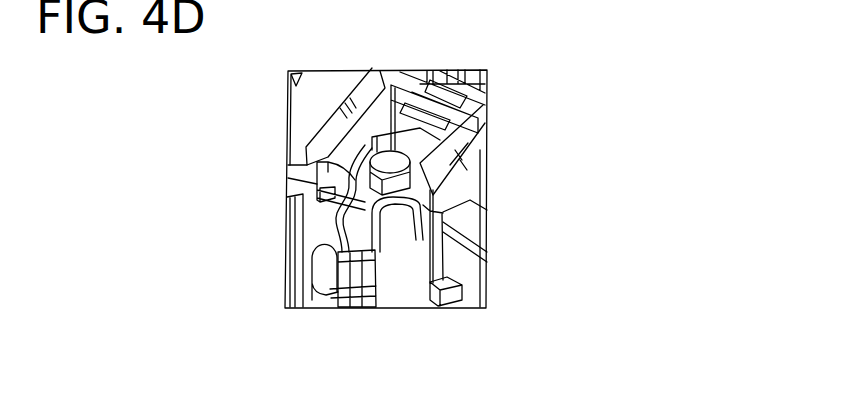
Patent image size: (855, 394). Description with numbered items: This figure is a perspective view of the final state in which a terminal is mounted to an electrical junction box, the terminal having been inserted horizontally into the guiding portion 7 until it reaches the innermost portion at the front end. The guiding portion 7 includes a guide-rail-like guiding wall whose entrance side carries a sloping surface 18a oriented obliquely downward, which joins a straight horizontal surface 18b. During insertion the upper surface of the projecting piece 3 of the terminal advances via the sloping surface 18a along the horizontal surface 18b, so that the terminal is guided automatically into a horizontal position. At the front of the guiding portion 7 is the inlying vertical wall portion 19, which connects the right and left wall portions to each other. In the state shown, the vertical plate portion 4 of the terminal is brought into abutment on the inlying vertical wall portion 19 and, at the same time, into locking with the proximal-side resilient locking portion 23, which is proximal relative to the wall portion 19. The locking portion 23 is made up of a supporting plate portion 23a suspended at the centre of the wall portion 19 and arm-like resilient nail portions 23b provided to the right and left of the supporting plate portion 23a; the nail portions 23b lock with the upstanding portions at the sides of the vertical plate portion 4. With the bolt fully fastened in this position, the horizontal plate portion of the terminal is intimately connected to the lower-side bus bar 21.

The guiding portion 7 is at (327, 111).
The sloping surface 18a is at (317, 184).
The straight horizontal surface 18b is at (372, 150).
The projecting piece 3 is at (380, 145).
The vertical plate portion 4 is at (413, 100).
The inlying vertical wall portion 19 is at (485, 73).
The lower-side bus bar 21 is at (403, 220).
The resilient locking portion 23 is at (440, 185).
The supporting plate portion 23a is at (455, 130).
The resilient nail portions 23b is at (440, 145).